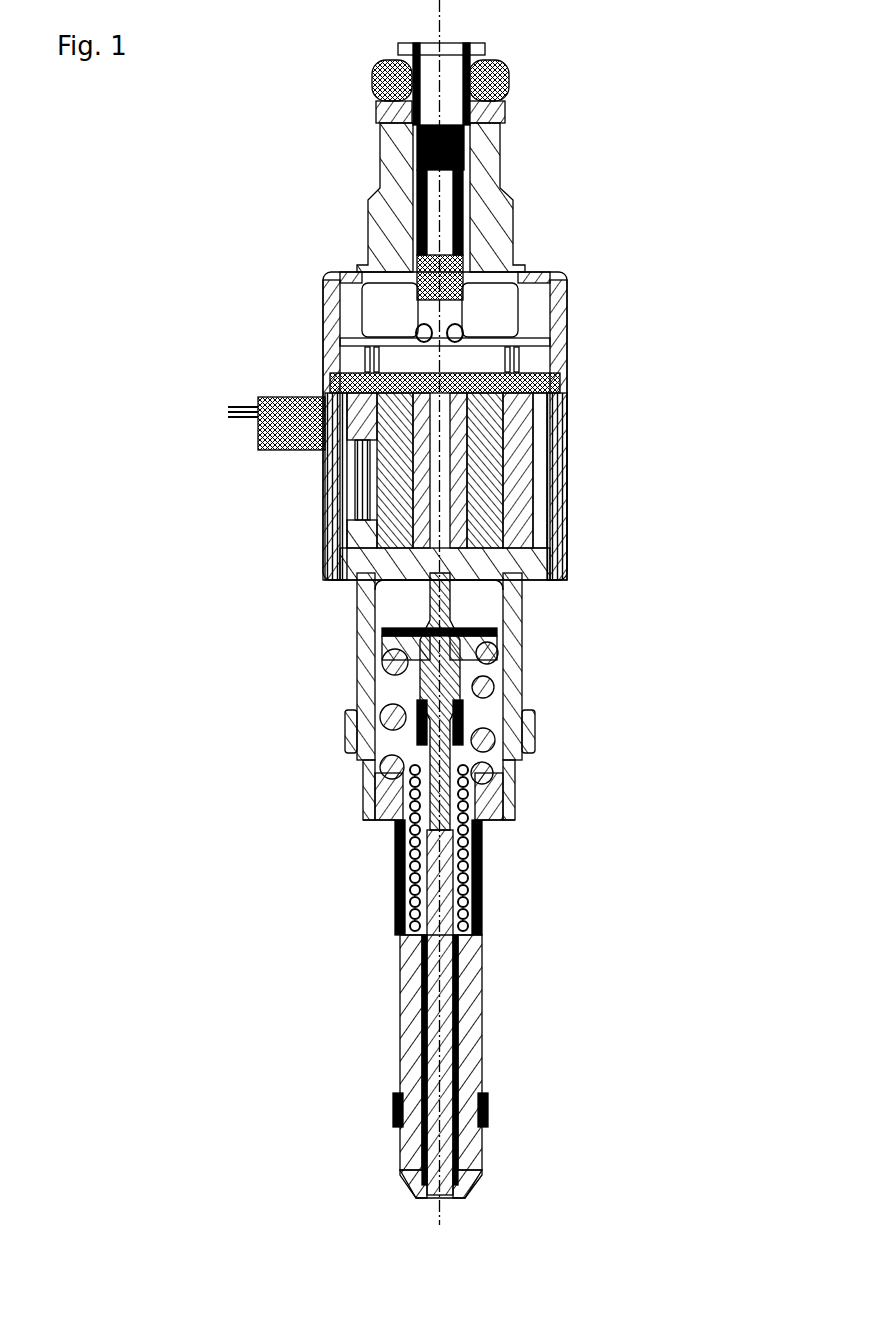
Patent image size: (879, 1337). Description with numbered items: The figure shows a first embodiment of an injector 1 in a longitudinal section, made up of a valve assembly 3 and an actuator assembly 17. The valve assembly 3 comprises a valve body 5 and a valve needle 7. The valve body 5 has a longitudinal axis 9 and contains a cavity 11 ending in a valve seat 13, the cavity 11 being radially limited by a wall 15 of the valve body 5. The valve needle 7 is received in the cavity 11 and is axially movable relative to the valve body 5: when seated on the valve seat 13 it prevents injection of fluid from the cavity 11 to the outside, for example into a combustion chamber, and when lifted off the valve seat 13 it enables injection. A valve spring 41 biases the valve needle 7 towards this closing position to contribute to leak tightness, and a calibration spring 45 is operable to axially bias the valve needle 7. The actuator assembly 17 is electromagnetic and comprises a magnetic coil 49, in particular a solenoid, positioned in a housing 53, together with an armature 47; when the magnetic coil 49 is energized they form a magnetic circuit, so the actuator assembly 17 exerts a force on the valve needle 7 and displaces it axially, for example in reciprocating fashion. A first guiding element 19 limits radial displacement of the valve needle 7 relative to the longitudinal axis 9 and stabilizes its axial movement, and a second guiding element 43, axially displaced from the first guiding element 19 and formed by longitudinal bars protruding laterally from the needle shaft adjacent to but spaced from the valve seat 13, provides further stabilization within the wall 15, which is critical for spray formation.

The injector 1 is at (645, 138).
The valve assembly 3 is at (533, 943).
The valve body 5 is at (402, 985).
The valve needle 7 is at (456, 1044).
The longitudinal axis 9 is at (442, 21).
The cavity 11 is at (388, 608).
The valve seat 13 is at (460, 1197).
The wall 15 is at (402, 880).
The actuator assembly 17 is at (610, 432).
The first guiding element 19 is at (474, 850).
The valve spring 41 is at (487, 683).
The second guiding element 43 is at (410, 1130).
The calibration spring 45 is at (482, 270).
The armature 47 is at (370, 358).
The magnetic coil 49 is at (352, 476).
The housing 53 is at (345, 536).